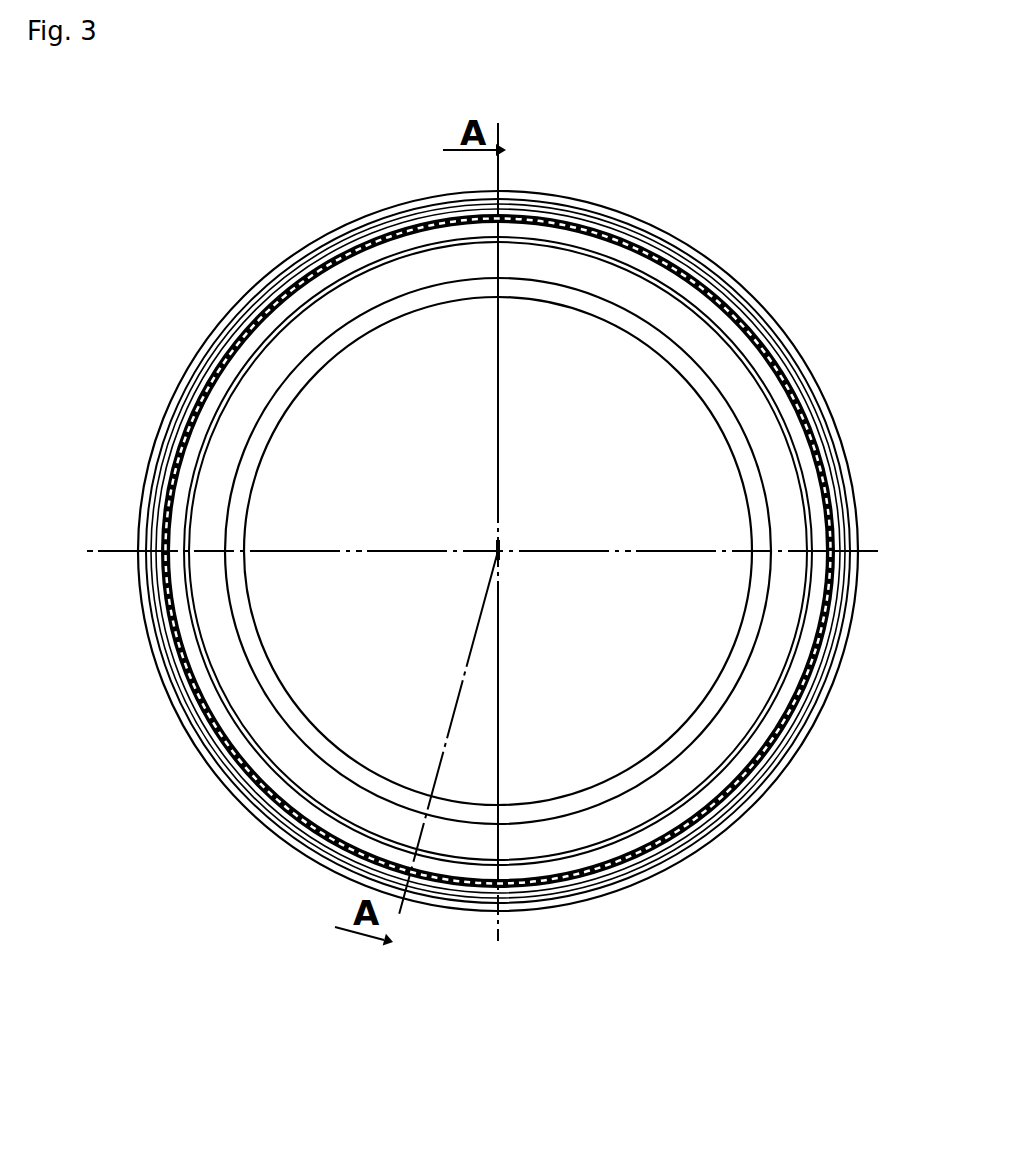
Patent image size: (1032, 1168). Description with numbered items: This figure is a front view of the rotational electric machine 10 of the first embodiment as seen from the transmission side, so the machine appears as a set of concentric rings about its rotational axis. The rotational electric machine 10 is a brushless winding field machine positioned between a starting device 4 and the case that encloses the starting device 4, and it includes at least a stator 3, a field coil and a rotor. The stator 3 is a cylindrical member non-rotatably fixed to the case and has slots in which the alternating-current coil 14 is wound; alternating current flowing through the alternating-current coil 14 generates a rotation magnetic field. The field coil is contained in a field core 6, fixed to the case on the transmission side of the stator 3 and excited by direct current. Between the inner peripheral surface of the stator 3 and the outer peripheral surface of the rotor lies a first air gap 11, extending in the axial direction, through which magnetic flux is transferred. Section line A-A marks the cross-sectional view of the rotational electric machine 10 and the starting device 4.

The stator 3 is at (830, 400).
The starting device 4 is at (723, 517).
The field core 6 is at (627, 290).
The rotational electric machine 10 is at (607, 203).
The first air gap 11 is at (712, 318).
The alternating-current coil 14 is at (782, 360).